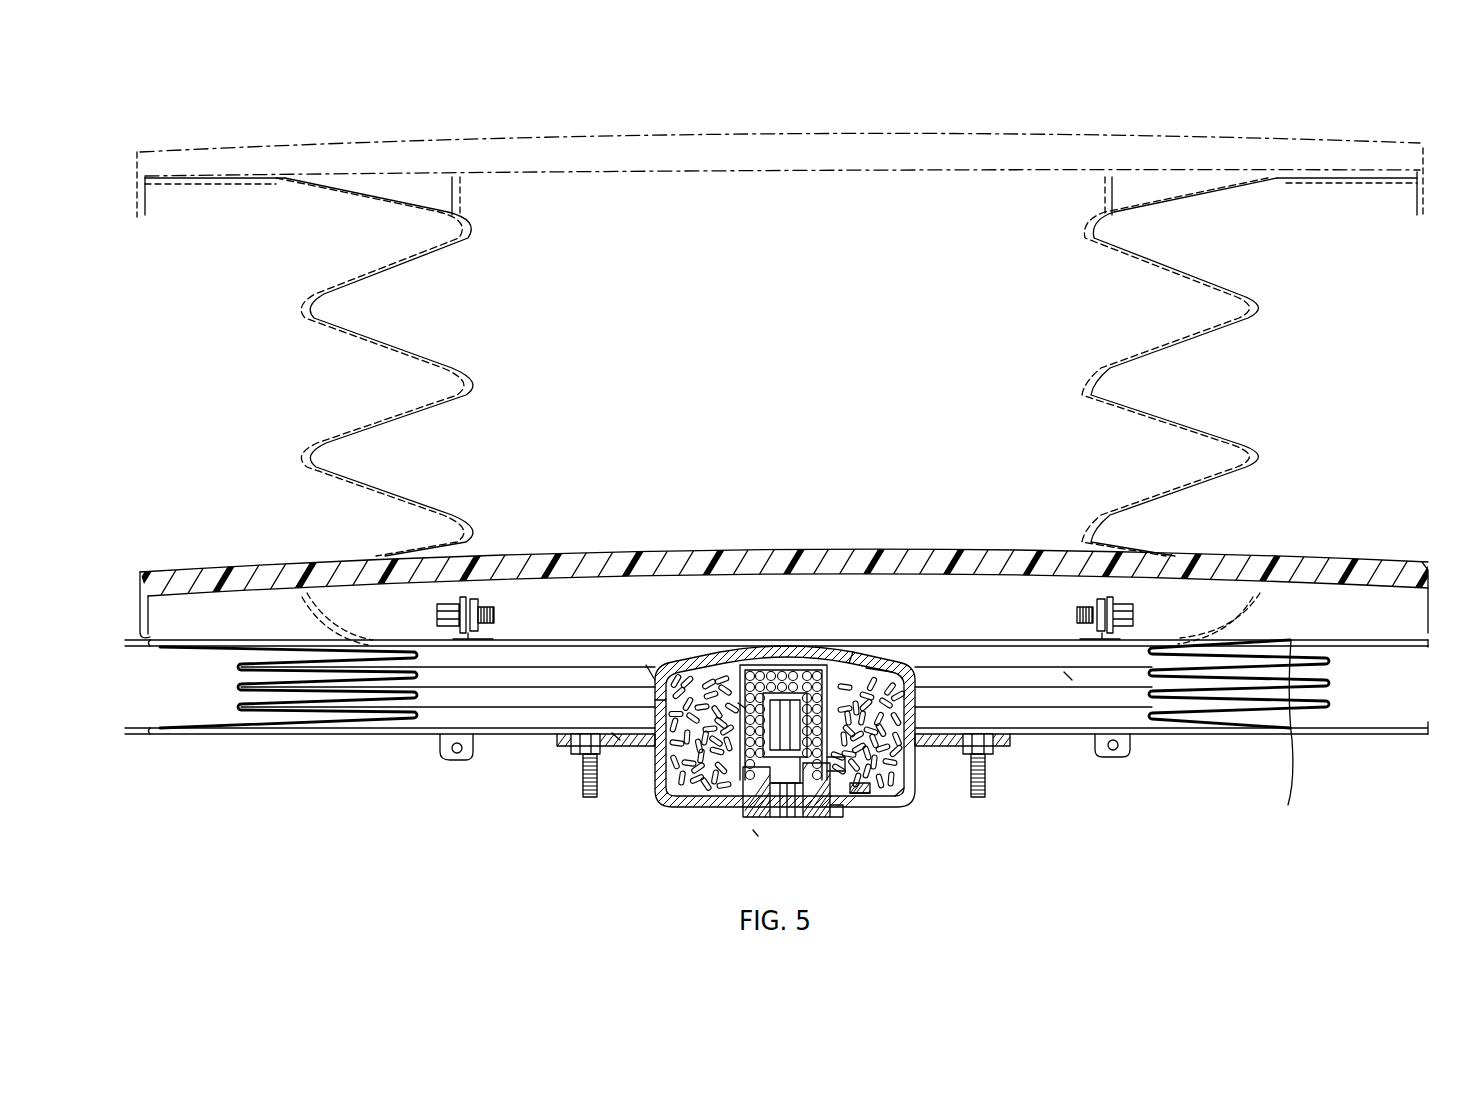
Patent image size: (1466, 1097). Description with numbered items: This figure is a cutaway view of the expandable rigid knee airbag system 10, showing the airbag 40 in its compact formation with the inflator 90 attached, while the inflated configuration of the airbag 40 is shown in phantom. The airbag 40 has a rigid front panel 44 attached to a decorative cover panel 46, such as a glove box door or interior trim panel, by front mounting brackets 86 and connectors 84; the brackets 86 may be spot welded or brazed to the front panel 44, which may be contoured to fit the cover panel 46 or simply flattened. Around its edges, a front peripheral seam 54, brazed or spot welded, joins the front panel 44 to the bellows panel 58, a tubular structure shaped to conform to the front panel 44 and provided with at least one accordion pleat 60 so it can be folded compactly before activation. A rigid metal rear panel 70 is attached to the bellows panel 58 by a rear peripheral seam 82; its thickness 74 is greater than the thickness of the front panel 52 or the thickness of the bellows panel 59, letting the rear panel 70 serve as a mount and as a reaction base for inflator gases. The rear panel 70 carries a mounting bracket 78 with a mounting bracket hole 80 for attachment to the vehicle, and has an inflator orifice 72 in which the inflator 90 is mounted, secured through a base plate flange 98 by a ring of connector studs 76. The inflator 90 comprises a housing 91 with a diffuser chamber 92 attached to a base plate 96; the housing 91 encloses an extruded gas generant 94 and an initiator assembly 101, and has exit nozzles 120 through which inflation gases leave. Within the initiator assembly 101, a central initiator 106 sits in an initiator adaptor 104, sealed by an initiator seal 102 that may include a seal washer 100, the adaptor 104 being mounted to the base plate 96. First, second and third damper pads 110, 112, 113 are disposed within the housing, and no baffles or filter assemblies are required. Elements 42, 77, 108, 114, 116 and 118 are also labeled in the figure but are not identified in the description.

The expandable rigid knee airbag system 10 is at (912, 124).
The airbag 40 is at (1278, 360).
The frame 42 is at (1425, 637).
The front panel 44 is at (1296, 640).
The decorative cover panel 46 is at (1325, 560).
The thickness of the front panel material 52 is at (132, 618).
The front peripheral seam 54 is at (1360, 640).
The bellows panel 58 is at (1170, 487).
The thickness of the bellows panel 59 is at (143, 697).
The accordion pleat 60 is at (290, 233).
The rear panel 70 is at (1372, 736).
The inflator orifice 72 is at (920, 742).
The thickness of the rear panel 74 is at (132, 705).
The connector studs 76 is at (582, 786).
The bolt head 77 is at (573, 756).
The mounting bracket 78 is at (440, 746).
The mounting bracket hole 80 is at (456, 754).
The rear peripheral seam 82 is at (1392, 736).
The connectors 84 is at (436, 610).
The front mounting brackets 86 is at (466, 614).
The inflator 90 is at (940, 860).
The housing 91 is at (648, 663).
The diffuser chamber 92 is at (728, 652).
The gas generant 94 is at (706, 770).
The base plate 96 is at (903, 803).
The base plate flange 98 is at (612, 735).
The seal washer 100 is at (837, 810).
The initiator assembly 101 is at (752, 845).
The initiator seal 102 is at (742, 812).
The initiator adaptor 104 is at (826, 812).
The central initiator 106 is at (792, 812).
The pellets 108 is at (740, 705).
The first damper pad 110 is at (870, 668).
The second damper pad 112 is at (870, 792).
The third damper pad 113 is at (862, 803).
The housing top wall inner surface 114 is at (858, 664).
The core 116 is at (1309, 722).
The frame core 118 is at (1068, 678).
The exit nozzles 120 is at (654, 706).